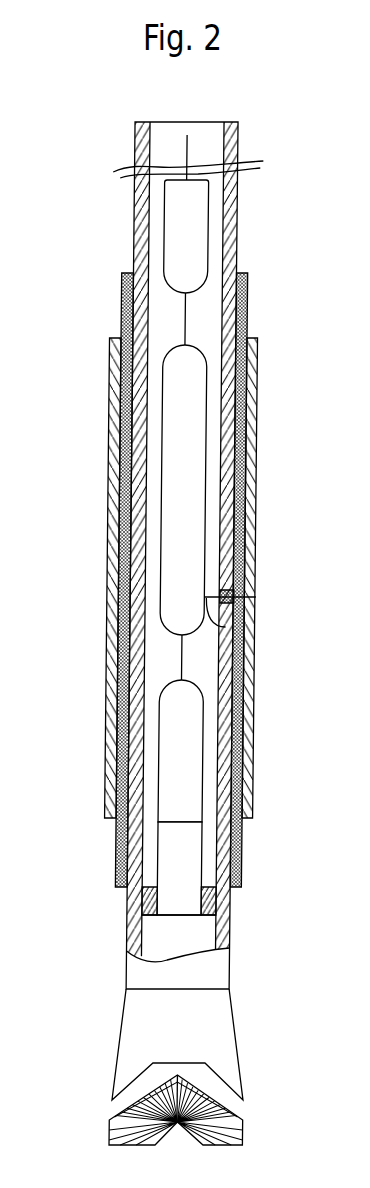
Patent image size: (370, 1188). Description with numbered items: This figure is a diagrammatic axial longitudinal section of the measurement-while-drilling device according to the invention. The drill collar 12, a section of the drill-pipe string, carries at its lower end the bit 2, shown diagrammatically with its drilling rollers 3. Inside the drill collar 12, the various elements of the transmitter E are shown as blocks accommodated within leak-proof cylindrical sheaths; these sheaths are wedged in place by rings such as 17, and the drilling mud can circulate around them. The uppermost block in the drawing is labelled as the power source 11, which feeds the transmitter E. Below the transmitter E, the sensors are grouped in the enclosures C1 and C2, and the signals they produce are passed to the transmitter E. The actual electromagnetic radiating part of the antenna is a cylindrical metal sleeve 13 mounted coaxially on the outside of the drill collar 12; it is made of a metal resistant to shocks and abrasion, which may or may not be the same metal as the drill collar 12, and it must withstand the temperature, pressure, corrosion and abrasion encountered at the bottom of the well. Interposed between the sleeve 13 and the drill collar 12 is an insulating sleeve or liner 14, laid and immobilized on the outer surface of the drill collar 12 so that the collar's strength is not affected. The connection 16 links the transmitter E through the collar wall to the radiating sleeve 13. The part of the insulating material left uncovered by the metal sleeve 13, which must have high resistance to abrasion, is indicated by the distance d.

The bit 2 is at (223, 1060).
The drilling rollers 3 is at (125, 1120).
The power source 11 is at (167, 233).
The drill collar 12 is at (143, 251).
The cylindrical metal sleeve 13 is at (117, 508).
The insulating sleeve or liner 14 is at (130, 297).
The transmitter E is at (204, 447).
The connection 16 is at (226, 627).
The enclosure C1 is at (178, 722).
The enclosure C2 is at (150, 903).
The distance d is at (67, 807).
The rings 17 is at (145, 890).